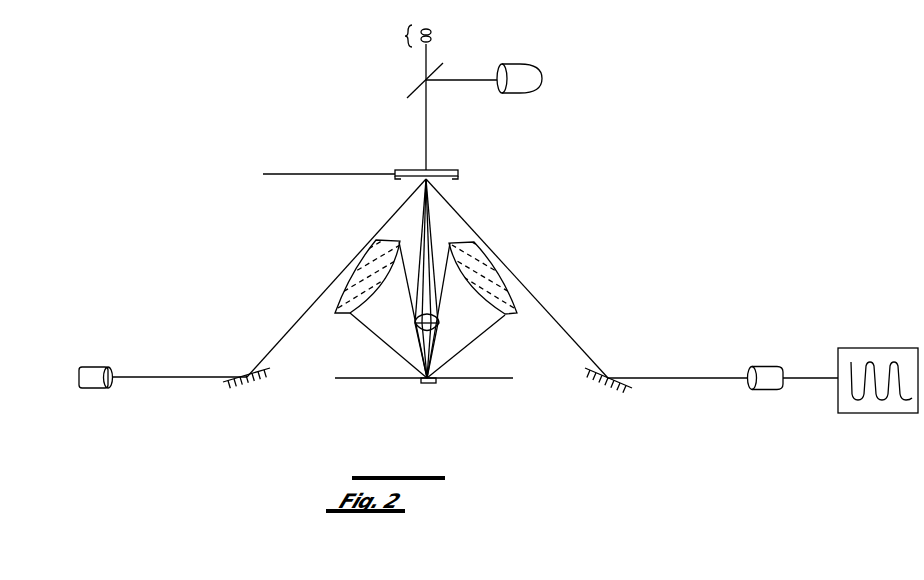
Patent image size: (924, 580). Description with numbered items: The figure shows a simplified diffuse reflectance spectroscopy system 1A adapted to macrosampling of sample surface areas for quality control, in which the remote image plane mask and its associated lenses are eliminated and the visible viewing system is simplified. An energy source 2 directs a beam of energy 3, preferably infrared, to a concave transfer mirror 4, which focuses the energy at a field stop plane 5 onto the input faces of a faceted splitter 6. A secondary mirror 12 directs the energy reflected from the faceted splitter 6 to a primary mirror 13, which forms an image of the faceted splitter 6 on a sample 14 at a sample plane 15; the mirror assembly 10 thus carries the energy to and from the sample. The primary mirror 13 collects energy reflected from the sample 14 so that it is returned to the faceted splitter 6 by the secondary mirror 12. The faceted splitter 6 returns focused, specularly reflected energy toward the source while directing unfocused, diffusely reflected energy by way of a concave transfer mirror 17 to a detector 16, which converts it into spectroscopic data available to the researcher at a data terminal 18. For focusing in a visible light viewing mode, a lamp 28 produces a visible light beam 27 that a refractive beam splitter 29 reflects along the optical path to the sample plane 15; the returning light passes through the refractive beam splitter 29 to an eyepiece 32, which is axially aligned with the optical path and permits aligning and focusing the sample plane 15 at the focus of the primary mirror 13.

The diffuse reflectance spectroscopy system 1A is at (507, 220).
The energy source 2 is at (95, 366).
The beam of energy 3 is at (172, 378).
The concave transfer mirror 4 is at (228, 383).
The field stop plane 5 is at (322, 175).
The faceted splitter 6 is at (406, 169).
The concave mirror 10 is at (358, 258).
The secondary mirror 12 is at (440, 330).
The primary mirror 13 is at (350, 306).
The sample 14 is at (432, 384).
The sample plane 15 is at (368, 380).
The detector 16 is at (765, 365).
The concave transfer mirror 17 is at (610, 375).
The data terminal 18 is at (876, 347).
The visible light beam 27 is at (457, 82).
The lamp 28 is at (509, 65).
The refractive beam splitter 29 is at (440, 63).
The eyepiece 32 is at (408, 37).